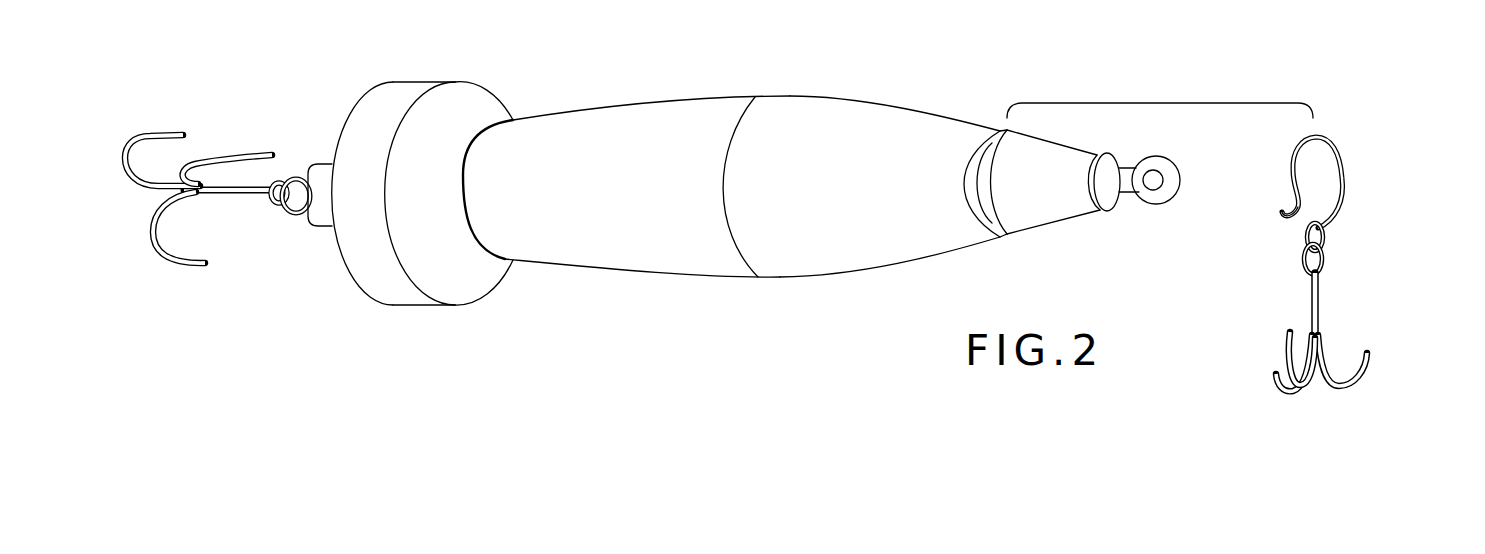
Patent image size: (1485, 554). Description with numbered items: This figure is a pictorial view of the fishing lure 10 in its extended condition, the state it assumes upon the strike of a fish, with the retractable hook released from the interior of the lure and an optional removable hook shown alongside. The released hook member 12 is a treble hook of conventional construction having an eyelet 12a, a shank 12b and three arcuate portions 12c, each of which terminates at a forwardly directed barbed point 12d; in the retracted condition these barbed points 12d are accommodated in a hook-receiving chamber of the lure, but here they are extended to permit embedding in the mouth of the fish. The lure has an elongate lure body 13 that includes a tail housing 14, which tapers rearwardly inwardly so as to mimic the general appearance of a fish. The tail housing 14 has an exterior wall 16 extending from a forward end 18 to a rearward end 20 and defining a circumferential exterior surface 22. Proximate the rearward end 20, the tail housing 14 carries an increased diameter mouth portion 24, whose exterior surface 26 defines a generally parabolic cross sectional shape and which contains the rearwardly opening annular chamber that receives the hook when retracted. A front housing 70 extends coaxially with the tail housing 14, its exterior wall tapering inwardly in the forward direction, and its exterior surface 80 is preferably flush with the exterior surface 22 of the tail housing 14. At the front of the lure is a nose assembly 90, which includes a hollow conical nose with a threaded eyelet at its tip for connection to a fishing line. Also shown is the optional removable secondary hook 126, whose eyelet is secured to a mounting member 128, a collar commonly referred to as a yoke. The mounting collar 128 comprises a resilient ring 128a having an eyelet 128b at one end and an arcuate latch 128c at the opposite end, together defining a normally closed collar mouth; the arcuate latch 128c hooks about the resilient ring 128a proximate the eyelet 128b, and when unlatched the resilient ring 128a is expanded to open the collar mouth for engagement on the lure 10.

The fishing lure 10 is at (448, 352).
The hook member 12 is at (196, 158).
The eyelet 12a is at (280, 183).
The shank 12b is at (230, 197).
The arcuate portions 12c is at (123, 150).
The barbed points 12d is at (158, 126).
The lure body 13 is at (796, 288).
The tail housing 14 is at (575, 127).
The exterior wall 16 is at (633, 102).
The forward end 18 is at (738, 88).
The rearward end 20 is at (362, 90).
The exterior surface 22 is at (695, 93).
The mouth portion 24 is at (373, 275).
The exterior surface 26 is at (423, 98).
The front housing 70 is at (882, 123).
The exterior surface 80 is at (818, 97).
The nose assembly 90 is at (1068, 208).
The removable secondary hook 126 is at (1313, 385).
The mounting member 128 is at (1338, 125).
The resilient ring 128a is at (1343, 165).
The eyelet 128b is at (1324, 232).
The arcuate latch 128c is at (1297, 221).